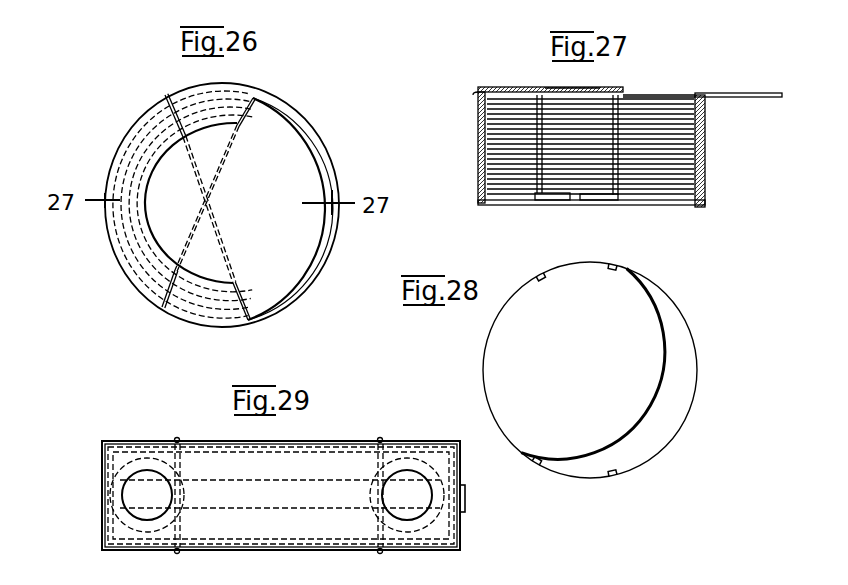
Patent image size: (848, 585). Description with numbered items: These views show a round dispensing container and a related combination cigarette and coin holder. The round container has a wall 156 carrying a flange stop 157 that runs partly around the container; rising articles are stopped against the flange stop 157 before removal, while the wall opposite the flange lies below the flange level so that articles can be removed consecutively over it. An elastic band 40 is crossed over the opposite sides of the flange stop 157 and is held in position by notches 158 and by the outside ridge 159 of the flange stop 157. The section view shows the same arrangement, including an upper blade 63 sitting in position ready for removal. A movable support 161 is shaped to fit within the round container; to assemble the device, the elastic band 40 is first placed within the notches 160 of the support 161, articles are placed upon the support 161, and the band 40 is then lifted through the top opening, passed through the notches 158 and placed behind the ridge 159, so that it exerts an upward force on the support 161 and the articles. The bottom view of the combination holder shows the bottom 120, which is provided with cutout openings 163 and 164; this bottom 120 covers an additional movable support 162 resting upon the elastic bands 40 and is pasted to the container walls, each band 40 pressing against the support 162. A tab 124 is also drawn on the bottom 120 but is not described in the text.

In FIG. 26, the elastic band 40 is at (253, 98).
In FIG. 27, the elastic band 40 is at (552, 198).
In FIG. 29, the elastic band 40 is at (175, 437).
In FIG. 27, the upper blade 63 is at (723, 92).
In FIG. 29, the bottom 120 is at (272, 525).
In FIG. 29, the tab 124 is at (466, 498).
In FIG. 26, the wall 156 is at (293, 110).
In FIG. 27, the wall 156 is at (478, 120).
In FIG. 26, the flange stop 157 is at (200, 112).
In FIG. 27, the flange stop 157 is at (495, 87).
In FIG. 26, the notches 158 is at (165, 95).
In FIG. 27, the notches 158 is at (545, 87).
In FIG. 27, the outside ridge 159 is at (476, 93).
In FIG. 28, the notches 160 is at (615, 266).
In FIG. 27, the support 161 is at (705, 194).
In FIG. 28, the support 161 is at (630, 350).
In FIG. 29, the movable support 162 is at (433, 460).
In FIG. 29, the cutout opening 163 is at (420, 520).
In FIG. 29, the cutout opening 164 is at (125, 497).